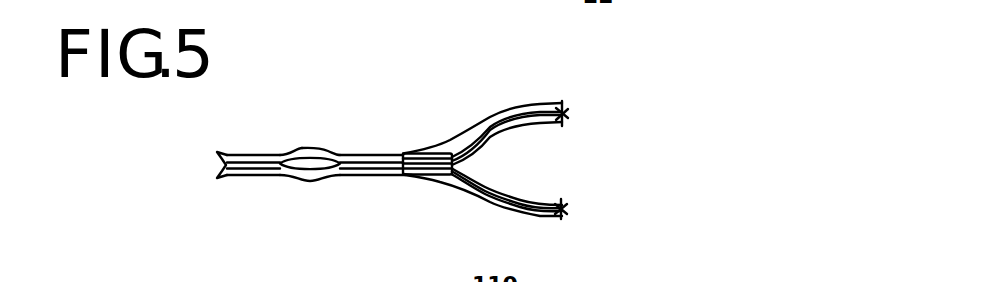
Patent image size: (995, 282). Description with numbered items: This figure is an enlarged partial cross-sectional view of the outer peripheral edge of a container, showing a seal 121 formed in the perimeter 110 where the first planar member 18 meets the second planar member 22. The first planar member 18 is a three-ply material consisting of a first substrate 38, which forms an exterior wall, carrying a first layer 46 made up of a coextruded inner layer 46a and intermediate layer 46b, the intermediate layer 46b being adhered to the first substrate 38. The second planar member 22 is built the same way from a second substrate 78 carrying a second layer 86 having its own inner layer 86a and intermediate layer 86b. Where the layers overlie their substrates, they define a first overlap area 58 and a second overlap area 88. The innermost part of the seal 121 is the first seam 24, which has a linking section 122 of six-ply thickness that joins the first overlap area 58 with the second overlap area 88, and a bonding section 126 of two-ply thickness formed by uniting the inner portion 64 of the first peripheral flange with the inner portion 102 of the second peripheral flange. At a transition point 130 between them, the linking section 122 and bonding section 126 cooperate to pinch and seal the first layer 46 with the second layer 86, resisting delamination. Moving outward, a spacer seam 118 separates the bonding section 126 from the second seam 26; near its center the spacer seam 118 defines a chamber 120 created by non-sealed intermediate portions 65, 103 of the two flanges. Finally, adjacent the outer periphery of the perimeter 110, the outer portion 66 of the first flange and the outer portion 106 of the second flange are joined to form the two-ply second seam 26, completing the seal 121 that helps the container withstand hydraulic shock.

The perimeter 110 is at (435, 90).
The seal 121 is at (307, 98).
The spacer seam 118 is at (322, 147).
The chamber 120 is at (312, 162).
The intermediate portion 65 is at (257, 168).
The second seam 26 is at (262, 155).
The outer portion 66 is at (226, 155).
The outer portion 106 is at (233, 178).
The intermediate portion 103 is at (303, 180).
The bonding section 126 is at (364, 175).
The inner portion 102 is at (383, 170).
The inner portion 64 is at (378, 154).
The transition point 130 is at (409, 149).
The first seam 24 is at (426, 154).
The first overlap area 58 is at (436, 154).
The first planar member 18 is at (529, 105).
The first substrate 38 is at (562, 104).
The intermediate layer 46b is at (562, 115).
The first layer 46 is at (564, 117).
The inner layer 46a is at (532, 127).
The inner layer 86a is at (531, 197).
The second planar member 22 is at (538, 218).
The linking section 122 is at (438, 184).
The second overlap area 88 is at (412, 176).
The second layer 86 is at (563, 208).
The intermediate layer 86b is at (563, 211).
The second substrate 78 is at (563, 214).